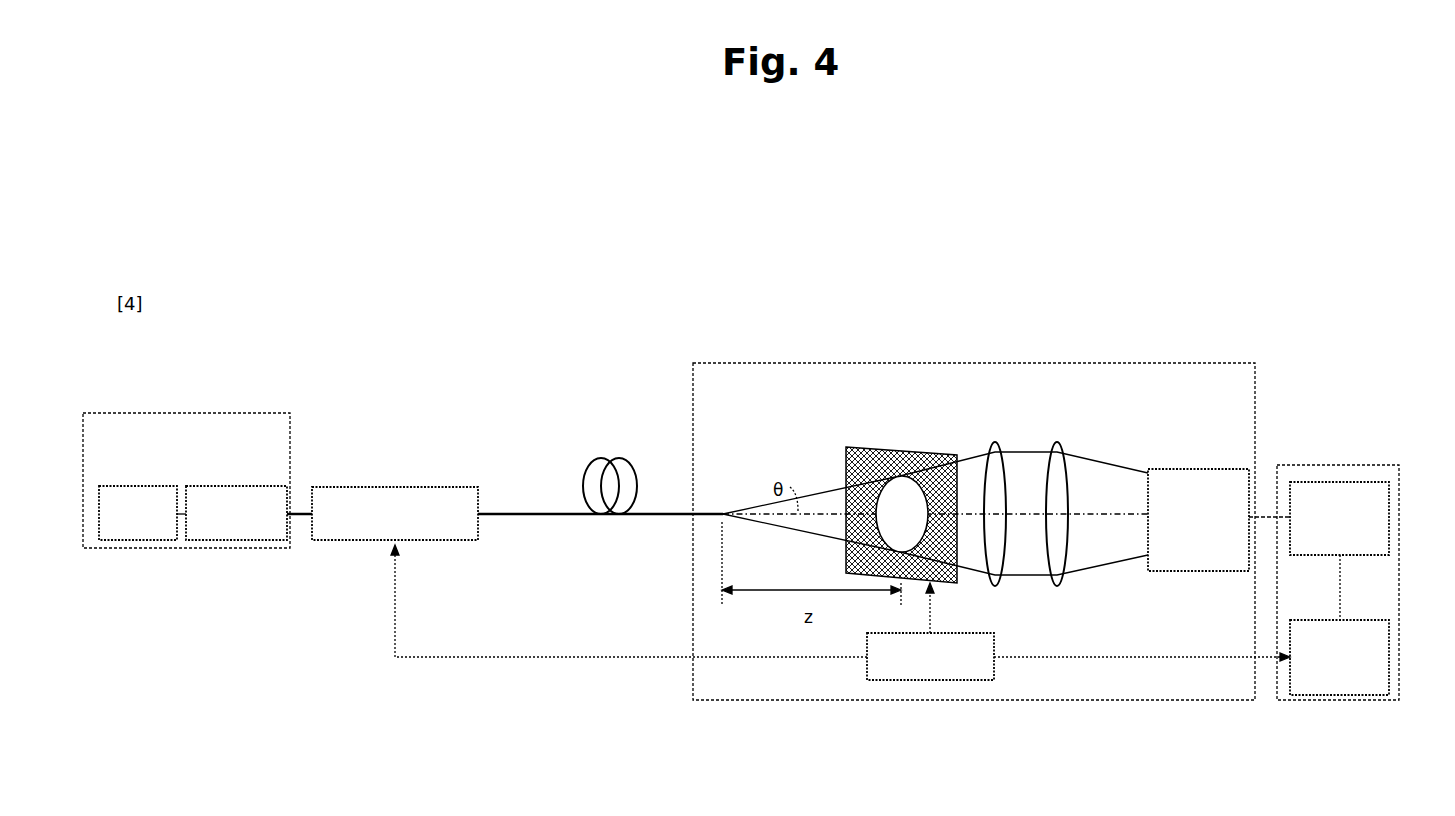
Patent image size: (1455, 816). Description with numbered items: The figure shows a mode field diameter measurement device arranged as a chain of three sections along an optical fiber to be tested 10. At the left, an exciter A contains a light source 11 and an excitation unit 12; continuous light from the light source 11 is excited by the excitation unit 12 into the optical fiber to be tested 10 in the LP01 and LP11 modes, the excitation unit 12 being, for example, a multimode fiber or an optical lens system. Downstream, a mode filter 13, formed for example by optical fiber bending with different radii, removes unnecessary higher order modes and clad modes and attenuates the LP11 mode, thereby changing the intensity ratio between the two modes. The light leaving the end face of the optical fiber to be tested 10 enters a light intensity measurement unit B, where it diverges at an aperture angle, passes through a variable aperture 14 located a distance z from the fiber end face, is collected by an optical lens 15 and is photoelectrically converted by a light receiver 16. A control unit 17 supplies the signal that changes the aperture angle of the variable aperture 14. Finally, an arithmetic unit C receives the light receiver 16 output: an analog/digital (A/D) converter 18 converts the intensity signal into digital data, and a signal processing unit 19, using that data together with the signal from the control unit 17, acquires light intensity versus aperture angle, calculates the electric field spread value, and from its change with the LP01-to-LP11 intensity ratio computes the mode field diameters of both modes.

The optical fiber to be tested 10 is at (621, 456).
The light source 11 is at (130, 486).
The excitation unit 12 is at (233, 486).
The mode filter 13 is at (376, 487).
The variable aperture 14 is at (897, 447).
The optical lens 15 is at (1072, 436).
The light receiver 16 is at (1193, 469).
The control unit 17 is at (996, 664).
The analog/digital (A/D) converter 18 is at (1390, 520).
The signal processing unit 19 is at (1390, 657).
The exciter A is at (208, 413).
The light intensity measurement unit B is at (1026, 363).
The arithmetic unit C is at (1328, 465).